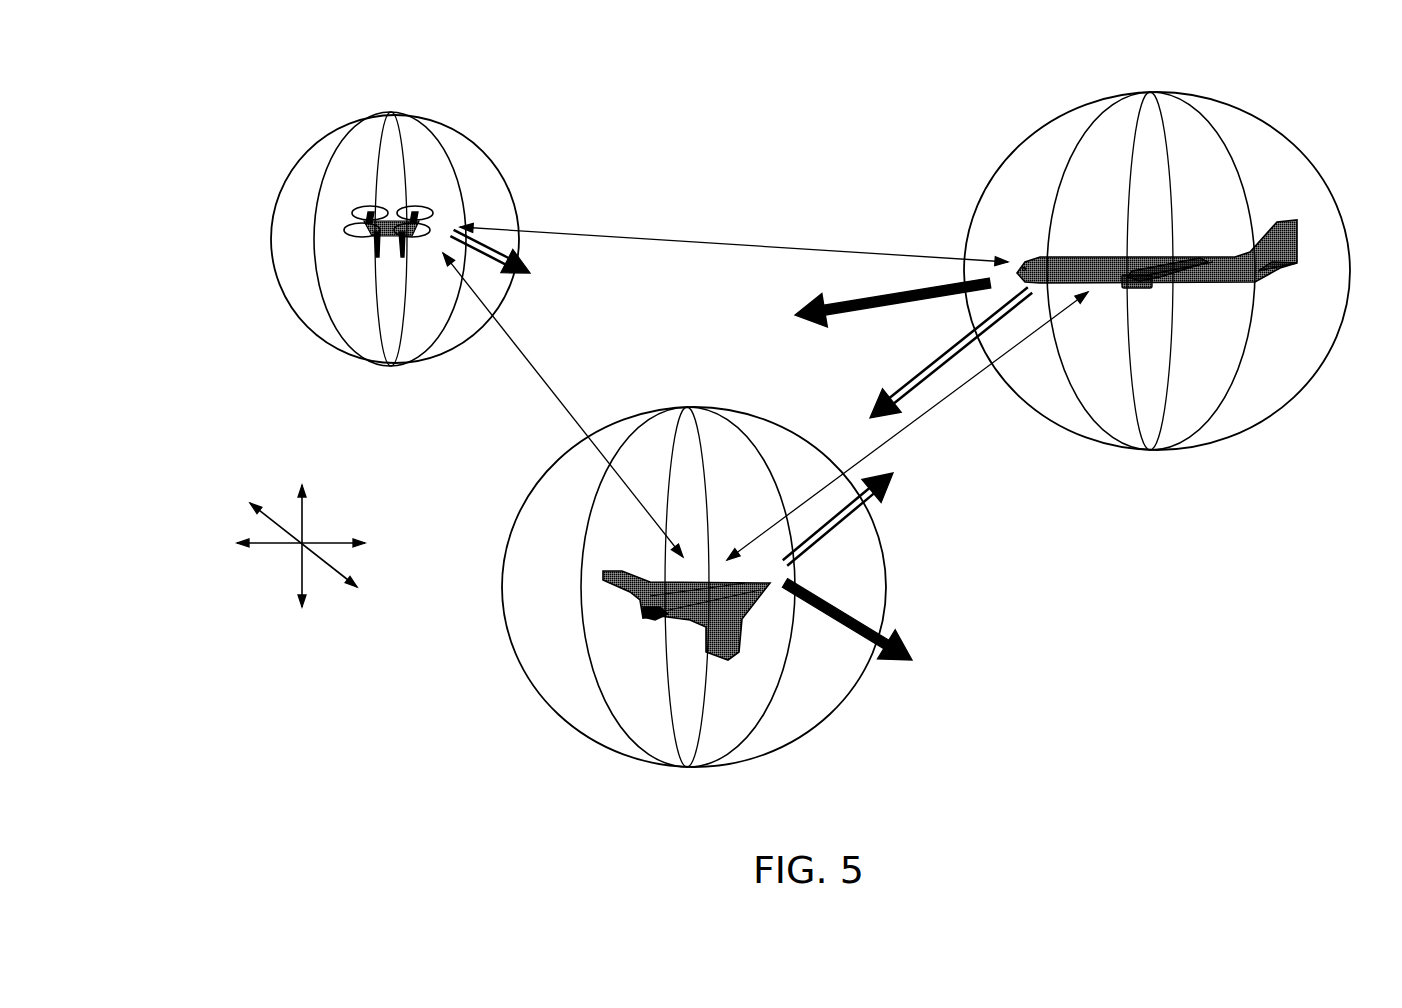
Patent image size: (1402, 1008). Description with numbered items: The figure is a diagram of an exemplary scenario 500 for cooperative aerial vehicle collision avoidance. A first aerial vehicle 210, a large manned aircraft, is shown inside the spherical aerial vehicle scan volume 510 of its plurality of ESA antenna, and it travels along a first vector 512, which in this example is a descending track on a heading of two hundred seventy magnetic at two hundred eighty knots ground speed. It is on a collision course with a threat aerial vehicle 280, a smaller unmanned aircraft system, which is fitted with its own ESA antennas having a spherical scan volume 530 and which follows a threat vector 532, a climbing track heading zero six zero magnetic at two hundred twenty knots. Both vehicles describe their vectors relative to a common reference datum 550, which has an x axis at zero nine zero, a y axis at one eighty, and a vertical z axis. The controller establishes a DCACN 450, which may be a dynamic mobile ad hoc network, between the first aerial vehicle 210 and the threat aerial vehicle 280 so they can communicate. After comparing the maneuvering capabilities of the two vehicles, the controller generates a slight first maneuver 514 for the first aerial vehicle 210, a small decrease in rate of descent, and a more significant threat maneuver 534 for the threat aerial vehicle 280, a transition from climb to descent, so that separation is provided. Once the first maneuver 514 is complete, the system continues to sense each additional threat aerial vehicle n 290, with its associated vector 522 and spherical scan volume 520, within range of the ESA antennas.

The exemplary scenario 500 is at (133, 122).
The threat aerial vehicle n 290 is at (432, 210).
The spherical scan volume 520 is at (510, 190).
The vector 522 is at (513, 281).
The DCACN 450 is at (722, 240).
The first maneuver 514 is at (803, 308).
The first aerial vehicle 210 is at (1212, 258).
The spherical aerial vehicle scan volume 510 is at (1327, 183).
The first vector 512 is at (873, 413).
The reference datum 550 is at (256, 452).
The threat vector 532 is at (887, 490).
The threat maneuver 534 is at (910, 655).
The spherical scan volume 530 is at (870, 667).
The threat aerial vehicle 280 is at (727, 658).